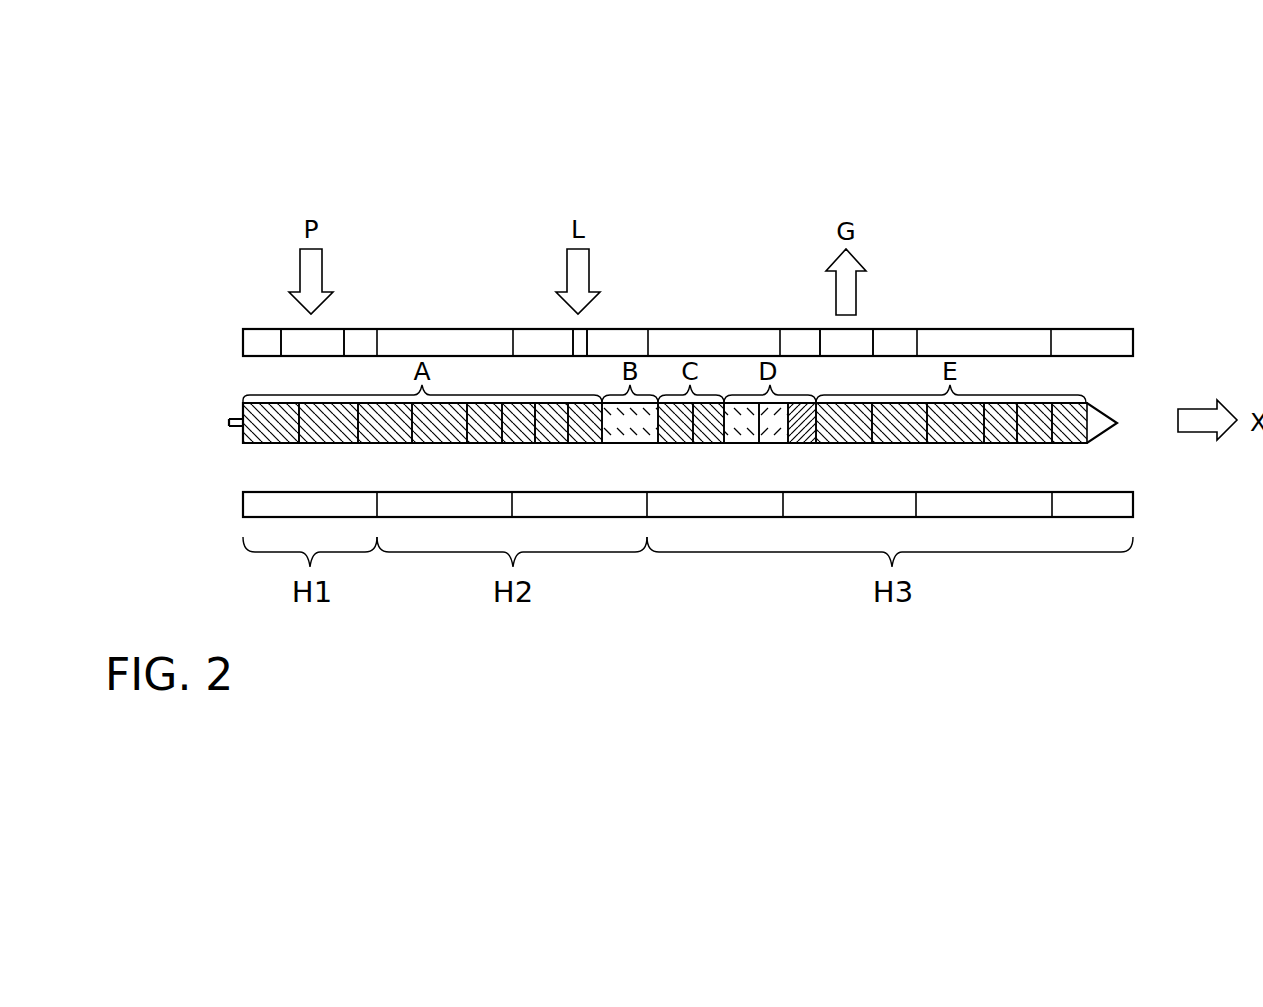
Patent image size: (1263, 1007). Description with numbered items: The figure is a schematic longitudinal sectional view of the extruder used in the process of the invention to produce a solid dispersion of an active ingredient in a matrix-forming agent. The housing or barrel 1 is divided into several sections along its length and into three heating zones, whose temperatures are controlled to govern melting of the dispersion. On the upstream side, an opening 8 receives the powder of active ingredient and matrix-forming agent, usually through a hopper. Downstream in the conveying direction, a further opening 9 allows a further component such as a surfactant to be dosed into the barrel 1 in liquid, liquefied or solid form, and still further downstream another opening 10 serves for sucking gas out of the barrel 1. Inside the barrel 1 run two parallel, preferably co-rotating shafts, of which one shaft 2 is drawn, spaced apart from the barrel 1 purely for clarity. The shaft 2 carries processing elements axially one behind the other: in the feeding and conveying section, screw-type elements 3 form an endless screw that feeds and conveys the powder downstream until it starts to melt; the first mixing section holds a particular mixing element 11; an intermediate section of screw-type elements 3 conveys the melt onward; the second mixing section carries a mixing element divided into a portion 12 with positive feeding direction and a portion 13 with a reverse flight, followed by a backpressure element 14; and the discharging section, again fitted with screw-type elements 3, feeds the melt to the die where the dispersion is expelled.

The barrel 1 is at (1143, 340).
The shaft 2 is at (624, 443).
The screw-type element 3 is at (276, 424).
The opening 8 is at (303, 343).
The further opening 9 is at (577, 343).
The another opening 10 is at (841, 342).
The mixing element 11 is at (629, 424).
The mixing element portion 12 is at (745, 424).
The mixing element portion 13 is at (777, 424).
The backpressure element 14 is at (802, 424).